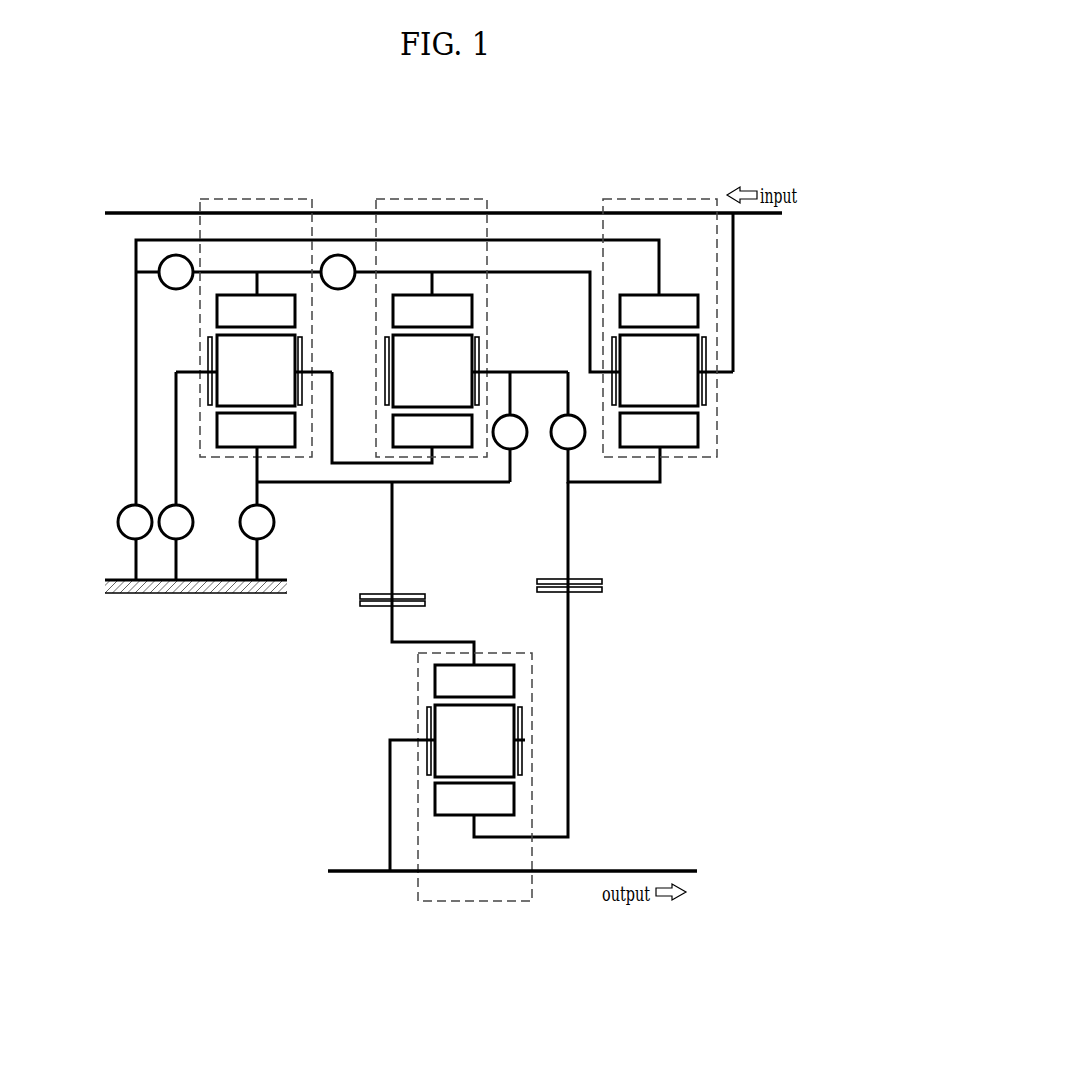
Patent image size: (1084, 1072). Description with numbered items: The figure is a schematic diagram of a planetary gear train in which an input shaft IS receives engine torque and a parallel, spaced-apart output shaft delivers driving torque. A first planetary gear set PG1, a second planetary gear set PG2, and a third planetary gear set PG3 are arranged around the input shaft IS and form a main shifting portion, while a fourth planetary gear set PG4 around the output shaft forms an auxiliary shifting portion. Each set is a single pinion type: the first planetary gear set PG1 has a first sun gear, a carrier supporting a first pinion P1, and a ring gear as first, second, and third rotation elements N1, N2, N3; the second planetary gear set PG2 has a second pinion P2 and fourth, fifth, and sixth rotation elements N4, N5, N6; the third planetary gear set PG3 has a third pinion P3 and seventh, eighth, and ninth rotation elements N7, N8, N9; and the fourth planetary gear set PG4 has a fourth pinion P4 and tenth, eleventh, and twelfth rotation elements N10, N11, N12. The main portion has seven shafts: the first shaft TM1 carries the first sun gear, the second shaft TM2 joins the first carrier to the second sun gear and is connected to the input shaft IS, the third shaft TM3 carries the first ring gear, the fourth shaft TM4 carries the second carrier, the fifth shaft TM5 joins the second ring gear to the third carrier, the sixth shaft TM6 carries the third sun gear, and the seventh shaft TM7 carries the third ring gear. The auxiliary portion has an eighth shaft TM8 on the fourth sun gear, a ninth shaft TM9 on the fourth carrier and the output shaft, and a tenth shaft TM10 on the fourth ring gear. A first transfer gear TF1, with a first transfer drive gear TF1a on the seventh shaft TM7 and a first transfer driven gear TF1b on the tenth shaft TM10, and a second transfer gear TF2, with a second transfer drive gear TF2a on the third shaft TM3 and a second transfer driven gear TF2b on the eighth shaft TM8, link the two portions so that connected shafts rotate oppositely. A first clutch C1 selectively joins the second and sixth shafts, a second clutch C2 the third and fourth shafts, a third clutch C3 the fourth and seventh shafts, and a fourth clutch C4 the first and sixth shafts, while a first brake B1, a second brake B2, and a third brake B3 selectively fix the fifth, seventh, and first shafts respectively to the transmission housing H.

The input shaft IS is at (586, 212).
The first planetary gear set PG1 is at (661, 194).
The second planetary gear set PG2 is at (438, 194).
The third planetary gear set PG3 is at (259, 194).
The fourth planetary gear set PG4 is at (475, 907).
The first pinion P1 is at (659, 370).
The second pinion P2 is at (432, 371).
The third pinion P3 is at (256, 370).
The fourth pinion P4 is at (474, 741).
The first rotation element N1 is at (659, 311).
The second rotation element N2 is at (707, 381).
The third rotation element N3 is at (659, 430).
The fourth rotation element N4 is at (432, 311).
The fifth rotation element N5 is at (384, 340).
The sixth rotation element N6 is at (432, 431).
The seventh rotation element N7 is at (256, 311).
The eighth rotation element N8 is at (207, 340).
The ninth rotation element N9 is at (256, 430).
The tenth rotation element N10 is at (474, 799).
The eleventh rotation element N11 is at (426, 720).
The twelfth rotation element N12 is at (474, 681).
The first shaft TM1 is at (333, 236).
The second shaft TM2 is at (548, 268).
The third shaft TM3 is at (565, 508).
The fourth shaft TM4 is at (504, 366).
The fifth shaft TM5 is at (327, 468).
The sixth shaft TM6 is at (233, 266).
The seventh shaft TM7 is at (398, 529).
The eighth shaft TM8 is at (573, 720).
The ninth shaft TM9 is at (387, 782).
The tenth shaft TM10 is at (387, 626).
The first clutch C1 is at (338, 272).
The second clutch C2 is at (568, 432).
The third clutch C3 is at (510, 432).
The fourth clutch C4 is at (176, 272).
The first brake B1 is at (176, 522).
The second brake B2 is at (257, 522).
The third brake B3 is at (135, 522).
The first transfer gear TF1 is at (447, 609).
The first transfer drive gear TF1a is at (426, 596).
The first transfer driven gear TF1b is at (426, 605).
The second transfer gear TF2 is at (631, 595).
The second transfer drive gear TF2a is at (603, 581).
The second transfer driven gear TF2b is at (603, 590).
The transmission housing H is at (188, 596).